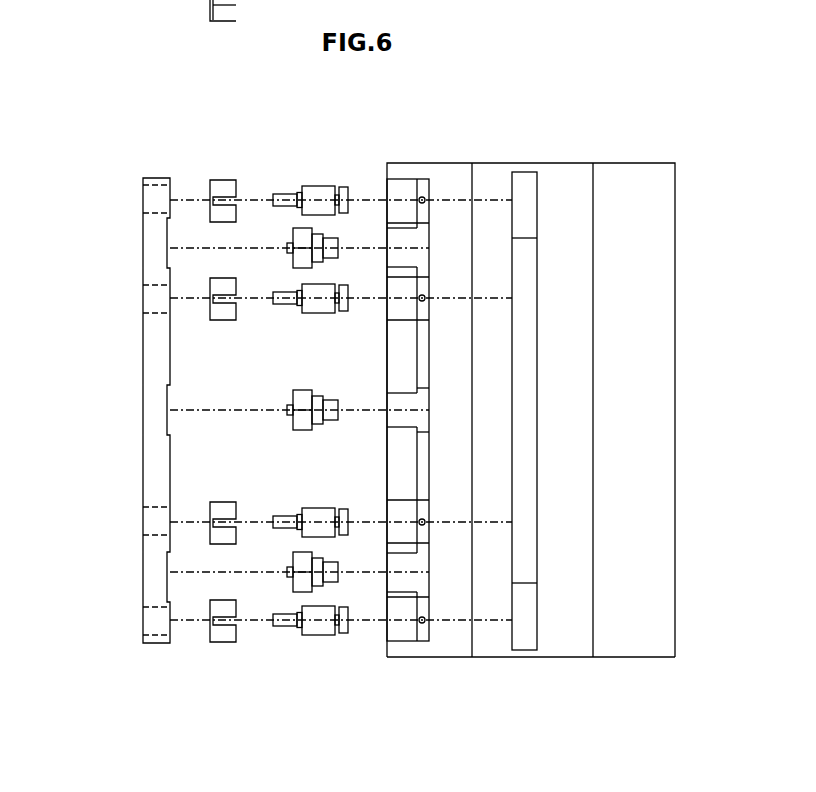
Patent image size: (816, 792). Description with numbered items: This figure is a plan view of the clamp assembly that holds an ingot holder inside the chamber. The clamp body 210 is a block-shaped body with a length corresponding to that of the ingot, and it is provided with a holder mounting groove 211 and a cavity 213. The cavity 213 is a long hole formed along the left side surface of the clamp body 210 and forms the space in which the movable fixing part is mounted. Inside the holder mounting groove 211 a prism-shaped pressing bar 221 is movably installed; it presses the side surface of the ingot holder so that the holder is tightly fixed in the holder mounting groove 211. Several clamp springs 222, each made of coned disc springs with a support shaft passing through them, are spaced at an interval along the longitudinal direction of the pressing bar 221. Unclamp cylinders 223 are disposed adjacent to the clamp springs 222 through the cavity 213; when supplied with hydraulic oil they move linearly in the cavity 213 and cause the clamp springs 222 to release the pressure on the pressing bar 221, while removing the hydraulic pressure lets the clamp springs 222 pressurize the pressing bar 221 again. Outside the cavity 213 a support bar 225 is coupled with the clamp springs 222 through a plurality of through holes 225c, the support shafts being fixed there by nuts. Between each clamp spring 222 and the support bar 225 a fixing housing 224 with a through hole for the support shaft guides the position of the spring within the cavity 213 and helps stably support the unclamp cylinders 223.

The clamp body 210 is at (632, 682).
The holder mounting groove 211 is at (548, 658).
The cavity 213 is at (386, 186).
The pressing bar 221 is at (522, 171).
The clamp spring 222 is at (318, 185).
The unclamp cylinder 223 is at (292, 227).
The fixing housing 224 is at (216, 179).
The support bar 225 is at (142, 410).
The through hole 225c is at (150, 200).